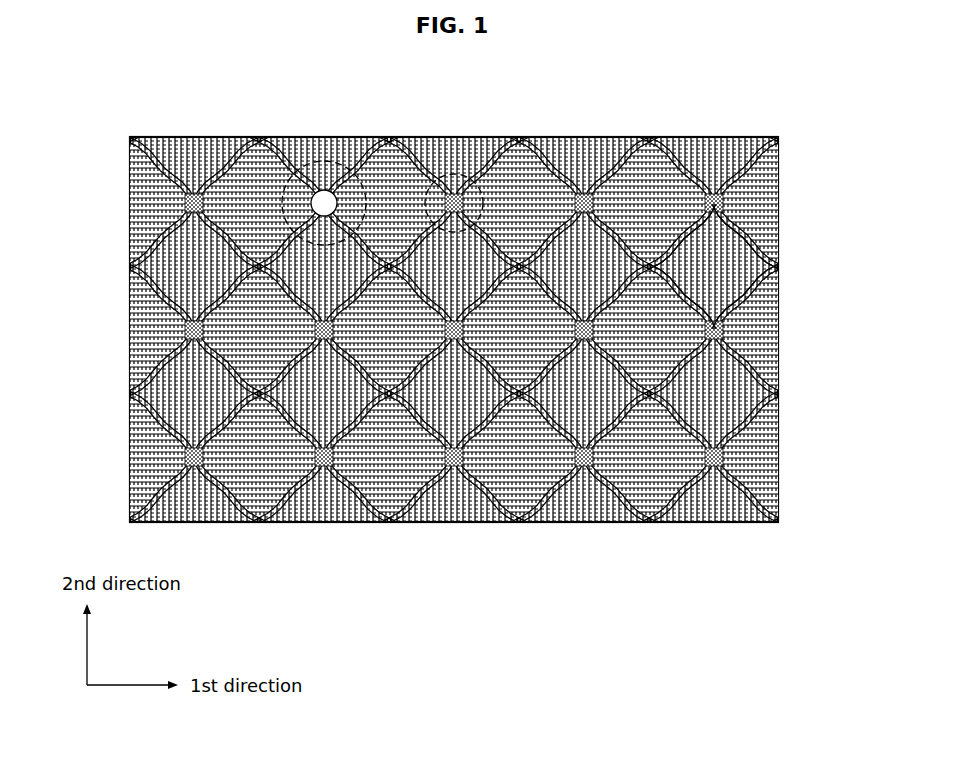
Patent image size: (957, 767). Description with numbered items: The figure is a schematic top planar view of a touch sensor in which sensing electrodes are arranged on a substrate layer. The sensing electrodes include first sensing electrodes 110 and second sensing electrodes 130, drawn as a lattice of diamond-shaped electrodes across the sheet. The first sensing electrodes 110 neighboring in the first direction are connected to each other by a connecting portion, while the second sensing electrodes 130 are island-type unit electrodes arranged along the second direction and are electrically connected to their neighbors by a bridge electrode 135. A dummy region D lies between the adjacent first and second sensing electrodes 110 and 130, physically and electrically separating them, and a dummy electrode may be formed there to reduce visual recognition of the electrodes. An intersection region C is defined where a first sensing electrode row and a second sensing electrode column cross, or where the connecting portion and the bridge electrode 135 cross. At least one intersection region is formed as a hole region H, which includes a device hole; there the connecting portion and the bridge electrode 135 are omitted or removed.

The first sensing electrodes 110 is at (778, 194).
The second sensing electrodes 130 is at (317, 523).
The bridge electrode 135 is at (724, 458).
The hole region H is at (335, 160).
The intersection region C is at (457, 163).
The dummy region D is at (774, 295).